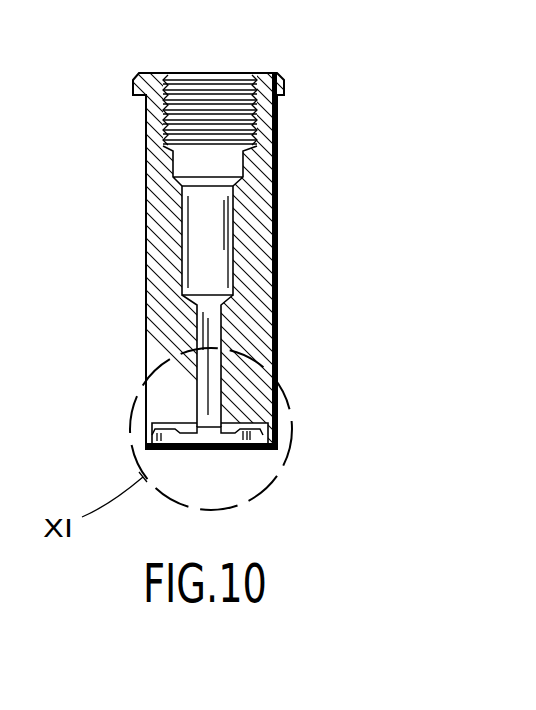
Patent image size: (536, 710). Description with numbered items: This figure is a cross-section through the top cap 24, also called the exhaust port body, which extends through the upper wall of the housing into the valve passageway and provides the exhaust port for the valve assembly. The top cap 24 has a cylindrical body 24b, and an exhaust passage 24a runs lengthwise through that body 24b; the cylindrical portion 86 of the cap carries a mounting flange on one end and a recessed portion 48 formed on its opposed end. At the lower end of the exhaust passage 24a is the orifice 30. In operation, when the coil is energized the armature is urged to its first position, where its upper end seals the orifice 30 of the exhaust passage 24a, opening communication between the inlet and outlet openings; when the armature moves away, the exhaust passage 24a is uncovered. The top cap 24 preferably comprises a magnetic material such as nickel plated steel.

The top cap 24 is at (284, 131).
The exhaust passage 24a is at (200, 240).
The cylindrical body 24b is at (259, 252).
The cylindrical portion 86 is at (275, 307).
The orifice 30 is at (178, 425).
The recessed portion 48 is at (243, 500).